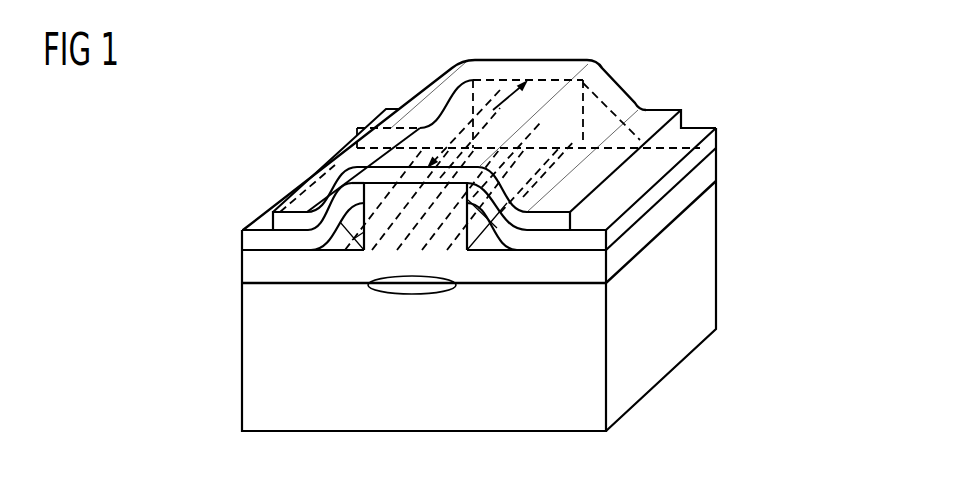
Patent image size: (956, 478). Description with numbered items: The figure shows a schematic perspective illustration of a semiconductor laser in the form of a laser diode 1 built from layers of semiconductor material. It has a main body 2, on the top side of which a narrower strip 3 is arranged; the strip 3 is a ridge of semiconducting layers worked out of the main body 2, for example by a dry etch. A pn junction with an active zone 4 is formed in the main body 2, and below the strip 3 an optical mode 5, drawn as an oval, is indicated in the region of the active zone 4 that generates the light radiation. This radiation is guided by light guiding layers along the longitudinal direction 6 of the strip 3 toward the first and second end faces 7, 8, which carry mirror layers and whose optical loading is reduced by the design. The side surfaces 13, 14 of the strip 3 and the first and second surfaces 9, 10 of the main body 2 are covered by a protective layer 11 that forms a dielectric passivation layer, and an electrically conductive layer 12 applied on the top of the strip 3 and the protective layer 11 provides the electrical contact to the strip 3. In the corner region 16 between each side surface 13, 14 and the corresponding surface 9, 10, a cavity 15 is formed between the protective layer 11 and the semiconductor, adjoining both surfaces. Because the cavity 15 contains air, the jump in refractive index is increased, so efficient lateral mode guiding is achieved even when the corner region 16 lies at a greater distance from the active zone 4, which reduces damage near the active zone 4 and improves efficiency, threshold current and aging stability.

The laser diode 1 is at (784, 157).
The main body 2 is at (663, 352).
The strip 3 is at (540, 82).
The active zone 4 is at (277, 287).
The optical mode 5 is at (393, 290).
The longitudinal direction 6 is at (493, 110).
The first end face 7 is at (279, 308).
The second end face 8 is at (668, 110).
The first surface 9 is at (585, 253).
The second surface 10 is at (345, 178).
The protective layer 11 is at (273, 240).
The electrically conductive layer 12 is at (654, 110).
The first side surface 13 is at (565, 152).
The second side surface 14 is at (360, 222).
The cavity 15 is at (365, 240).
The corner region 16 is at (463, 230).